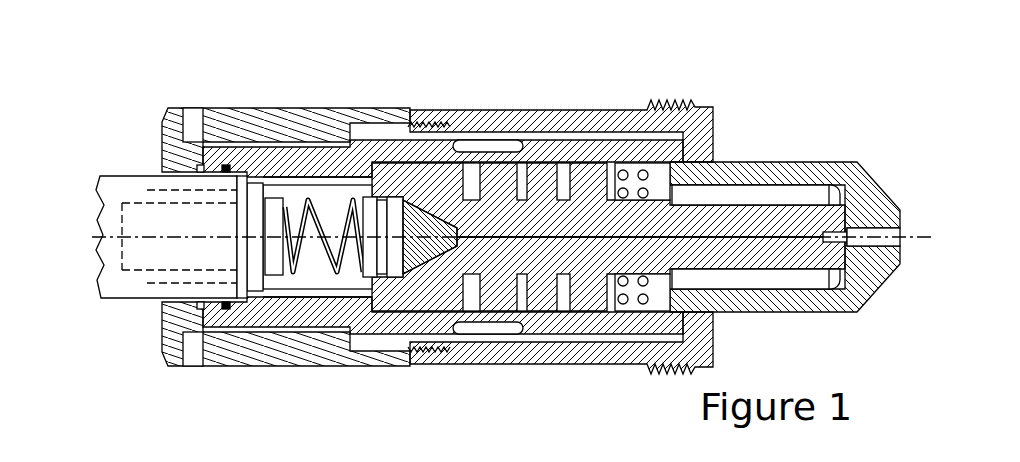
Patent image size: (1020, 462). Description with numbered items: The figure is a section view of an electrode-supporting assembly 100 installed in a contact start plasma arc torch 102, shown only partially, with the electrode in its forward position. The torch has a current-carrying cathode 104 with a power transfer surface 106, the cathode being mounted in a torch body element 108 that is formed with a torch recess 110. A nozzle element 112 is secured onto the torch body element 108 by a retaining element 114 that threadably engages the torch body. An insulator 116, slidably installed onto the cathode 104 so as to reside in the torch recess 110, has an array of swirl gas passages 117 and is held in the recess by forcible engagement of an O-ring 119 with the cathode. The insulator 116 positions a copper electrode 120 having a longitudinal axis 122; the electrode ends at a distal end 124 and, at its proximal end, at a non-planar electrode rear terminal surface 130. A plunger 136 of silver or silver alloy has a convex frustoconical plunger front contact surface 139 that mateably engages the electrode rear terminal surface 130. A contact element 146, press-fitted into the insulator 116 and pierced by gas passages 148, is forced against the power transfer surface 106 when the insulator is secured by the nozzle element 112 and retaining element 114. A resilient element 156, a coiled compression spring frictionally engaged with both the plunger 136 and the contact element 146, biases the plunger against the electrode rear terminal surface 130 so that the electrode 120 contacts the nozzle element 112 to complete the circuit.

The electrode-supporting assembly 100 is at (700, 186).
The contact start plasma arc torch 102 is at (614, 212).
The current-carrying cathode 104 is at (105, 170).
The power transfer surface 106 is at (265, 318).
The torch body element 108 is at (160, 133).
The torch recess 110 is at (204, 166).
The nozzle element 112 is at (870, 187).
The retaining element 114 is at (520, 108).
The insulator 116 is at (473, 150).
The swirl gas passages 117 is at (643, 170).
The O-ring 119 is at (218, 304).
The electrode 120 is at (760, 203).
The longitudinal axis 122 is at (153, 238).
The distal end 124 is at (820, 270).
The electrode rear terminal surface 130 is at (450, 250).
The plunger 136 is at (395, 196).
The plunger front contact surface 139 is at (407, 250).
The contact element 146 is at (281, 203).
The gas passages 148 is at (268, 318).
The resilient element 156 is at (330, 266).